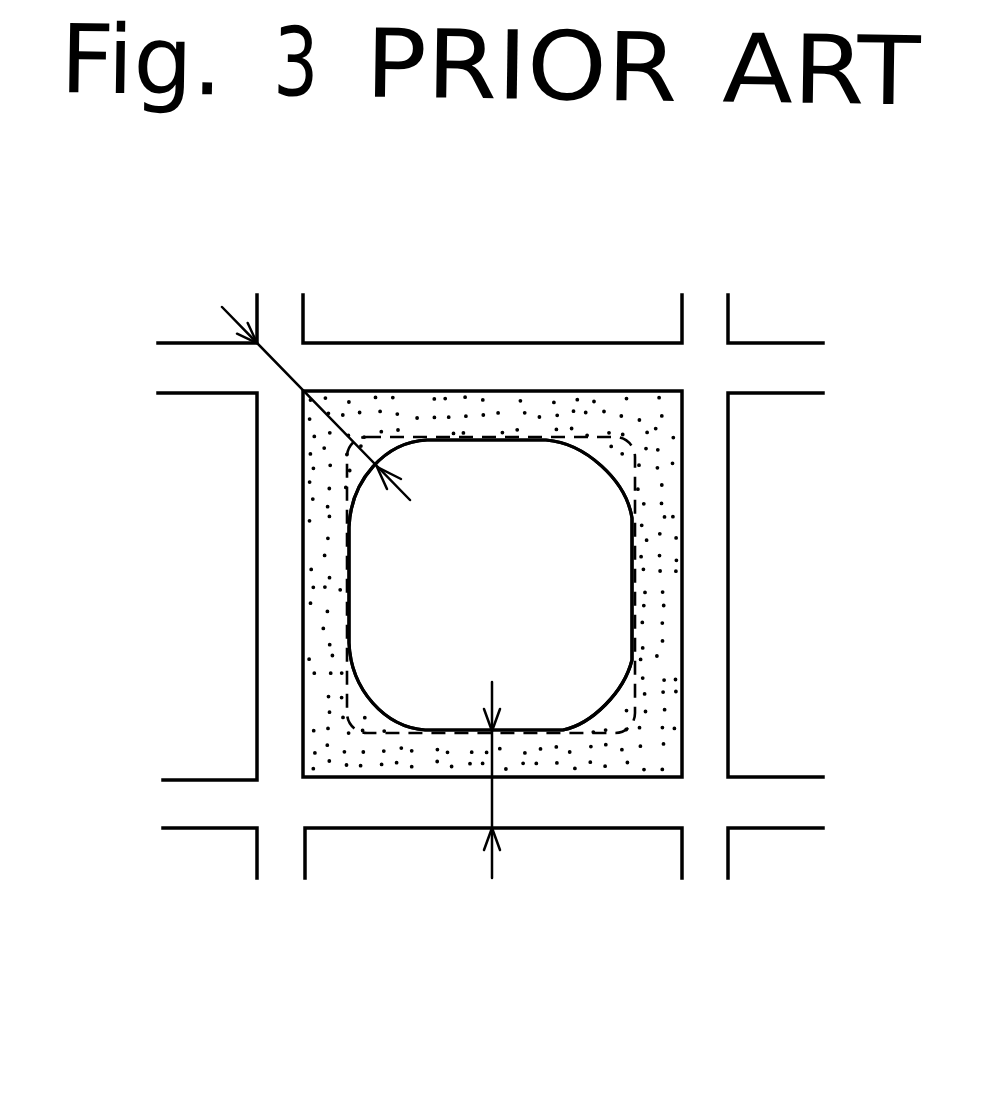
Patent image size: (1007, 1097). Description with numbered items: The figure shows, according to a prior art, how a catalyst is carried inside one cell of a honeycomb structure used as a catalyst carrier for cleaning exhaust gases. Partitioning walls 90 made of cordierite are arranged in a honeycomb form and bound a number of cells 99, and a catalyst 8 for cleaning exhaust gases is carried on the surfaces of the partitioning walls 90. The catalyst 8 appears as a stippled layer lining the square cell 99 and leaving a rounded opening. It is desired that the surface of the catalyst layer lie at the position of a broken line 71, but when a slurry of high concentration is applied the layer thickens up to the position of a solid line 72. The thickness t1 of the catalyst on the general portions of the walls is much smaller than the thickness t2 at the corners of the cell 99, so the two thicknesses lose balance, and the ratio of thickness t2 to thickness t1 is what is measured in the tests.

The catalyst 8 is at (647, 750).
The partitioning walls 90 is at (772, 367).
The cells 99 is at (509, 508).
The broken line 71 is at (389, 737).
The solid line 72 is at (372, 696).
The thickness of the catalyst on general portions t1 is at (490, 798).
The thickness of the catalyst at corners t2 is at (367, 437).